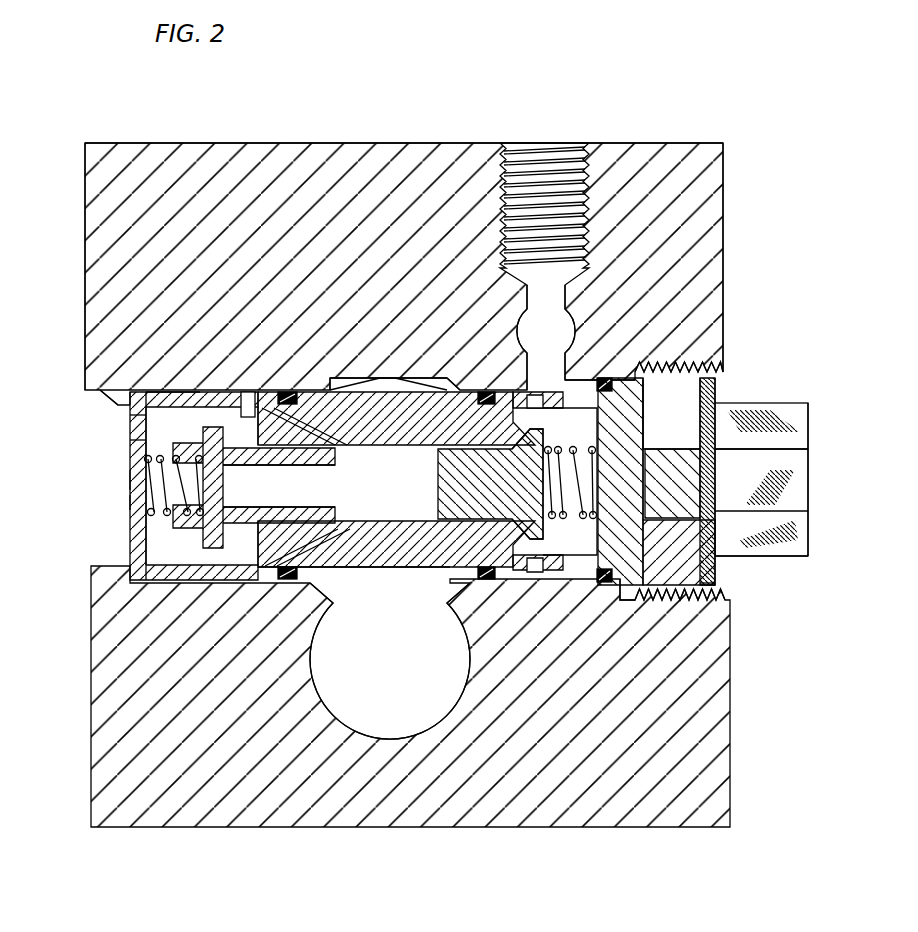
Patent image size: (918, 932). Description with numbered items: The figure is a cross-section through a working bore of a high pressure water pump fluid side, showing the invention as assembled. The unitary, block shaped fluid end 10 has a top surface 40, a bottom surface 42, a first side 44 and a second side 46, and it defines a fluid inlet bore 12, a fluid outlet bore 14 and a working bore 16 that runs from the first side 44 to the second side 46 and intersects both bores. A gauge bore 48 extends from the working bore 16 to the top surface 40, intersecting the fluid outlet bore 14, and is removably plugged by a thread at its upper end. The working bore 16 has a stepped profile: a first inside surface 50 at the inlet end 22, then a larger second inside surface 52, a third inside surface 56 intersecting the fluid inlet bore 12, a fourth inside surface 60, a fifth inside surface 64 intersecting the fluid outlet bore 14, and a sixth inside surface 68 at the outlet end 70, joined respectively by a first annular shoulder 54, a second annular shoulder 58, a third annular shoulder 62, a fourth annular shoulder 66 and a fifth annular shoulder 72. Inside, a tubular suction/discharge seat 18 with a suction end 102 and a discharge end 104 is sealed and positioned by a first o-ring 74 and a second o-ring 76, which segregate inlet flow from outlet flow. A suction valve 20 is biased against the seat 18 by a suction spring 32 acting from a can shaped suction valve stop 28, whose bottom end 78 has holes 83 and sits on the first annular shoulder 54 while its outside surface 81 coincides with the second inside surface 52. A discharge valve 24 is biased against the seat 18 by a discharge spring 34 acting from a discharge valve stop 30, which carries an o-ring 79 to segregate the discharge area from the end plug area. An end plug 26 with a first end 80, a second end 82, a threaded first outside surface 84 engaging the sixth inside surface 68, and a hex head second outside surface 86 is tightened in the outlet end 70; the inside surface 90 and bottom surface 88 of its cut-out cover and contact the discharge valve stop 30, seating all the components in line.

The fluid end 10 is at (441, 94).
The fluid inlet bore 12 is at (378, 665).
The fluid outlet bore 14 is at (535, 343).
The working bore 16 is at (122, 500).
The suction/discharge seat 18 is at (388, 570).
The suction valve 20 is at (260, 500).
The inlet end 22 is at (90, 478).
The discharge valve 24 is at (461, 500).
The end plug 26 is at (796, 378).
The suction valve stop 28 is at (157, 398).
The discharge valve stop 30 is at (629, 493).
The suction spring 32 is at (152, 530).
The discharge spring 34 is at (584, 429).
The top surface 40 is at (320, 143).
The bottom surface 42 is at (523, 828).
The first side 44 is at (86, 283).
The second side 46 is at (723, 267).
The gauge bore 48 is at (550, 155).
The first inside surface 50 is at (117, 404).
The second inside surface 52 is at (193, 392).
The first annular shoulder 54 is at (128, 393).
The third inside surface 56 is at (385, 377).
The second annular shoulder 58 is at (348, 378).
The fourth inside surface 60 is at (460, 388).
The third annular shoulder 62 is at (403, 378).
The fifth inside surface 64 is at (586, 379).
The fourth annular shoulder 66 is at (553, 578).
The sixth inside surface 68 is at (655, 368).
The outlet end 70 is at (729, 378).
The fifth annular shoulder 72 is at (624, 600).
The first o-ring 74 is at (287, 392).
The second o-ring 76 is at (487, 392).
The bottom end 78 is at (129, 423).
The o-ring 79 is at (601, 584).
The first end 80 is at (644, 397).
The outside surface 81 is at (165, 393).
The second end 82 is at (810, 417).
The holes 83 is at (129, 446).
The first outside surface 84 is at (678, 592).
The second outside surface 86 is at (798, 548).
The bottom surface 88 is at (712, 478).
The inside surface 90 is at (659, 441).
The suction end 102 is at (245, 392).
The discharge end 104 is at (530, 484).